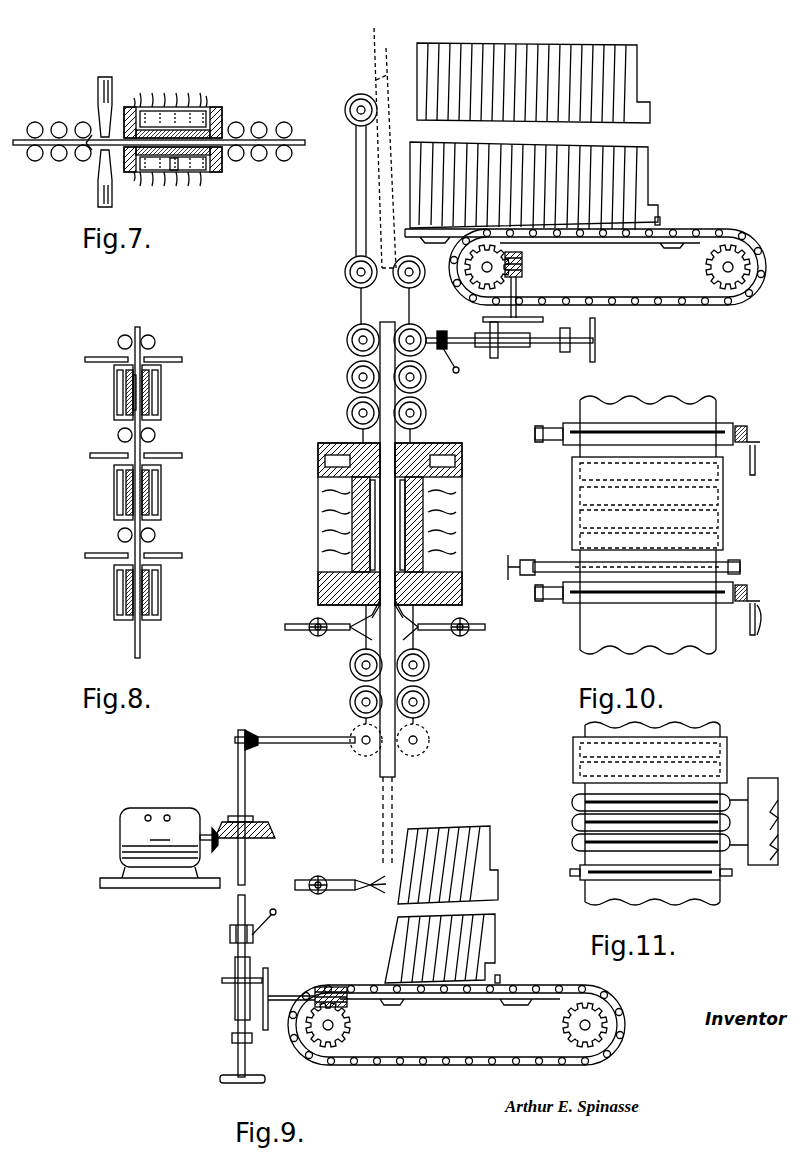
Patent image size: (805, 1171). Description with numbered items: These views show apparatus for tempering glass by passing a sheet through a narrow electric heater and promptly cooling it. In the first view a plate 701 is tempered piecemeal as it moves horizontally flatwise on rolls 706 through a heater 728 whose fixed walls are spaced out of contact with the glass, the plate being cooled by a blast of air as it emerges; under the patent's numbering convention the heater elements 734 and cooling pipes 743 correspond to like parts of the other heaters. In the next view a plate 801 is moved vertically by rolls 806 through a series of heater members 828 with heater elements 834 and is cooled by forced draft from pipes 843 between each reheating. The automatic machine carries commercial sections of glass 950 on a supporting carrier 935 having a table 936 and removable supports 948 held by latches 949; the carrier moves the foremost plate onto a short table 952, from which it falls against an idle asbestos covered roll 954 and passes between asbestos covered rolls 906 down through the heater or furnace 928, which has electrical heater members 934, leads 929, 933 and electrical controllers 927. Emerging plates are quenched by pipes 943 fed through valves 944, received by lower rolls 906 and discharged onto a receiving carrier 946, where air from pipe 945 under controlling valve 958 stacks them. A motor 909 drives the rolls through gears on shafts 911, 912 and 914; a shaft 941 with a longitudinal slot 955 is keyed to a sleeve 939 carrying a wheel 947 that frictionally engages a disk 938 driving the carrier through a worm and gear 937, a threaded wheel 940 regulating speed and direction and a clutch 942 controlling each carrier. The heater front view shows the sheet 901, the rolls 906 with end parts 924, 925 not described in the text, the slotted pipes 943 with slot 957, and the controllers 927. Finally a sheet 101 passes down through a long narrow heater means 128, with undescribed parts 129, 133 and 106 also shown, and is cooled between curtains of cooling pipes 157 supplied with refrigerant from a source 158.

In FIG. 7, the plate 701 is at (292, 147).
In FIG. 7, the rolls 706 is at (76, 155).
In FIG. 7, the cooling pipes 743 is at (113, 90).
In FIG. 7, the heater 728 is at (216, 107).
In FIG. 7, the heater elements 734 is at (172, 170).
In FIG. 8, the plate 801 is at (140, 640).
In FIG. 8, the rolls 806 is at (128, 338).
In FIG. 8, the pipes 843 is at (96, 357).
In FIG. 8, the heater member 828 is at (160, 375).
In FIG. 8, the heater elements 834 is at (145, 396).
In FIG. 9, the sections of sheet or plate glass 950 is at (376, 45).
In FIG. 9, the asbestos covered roll 954 is at (355, 96).
In FIG. 9, the shaft 914 is at (385, 290).
In FIG. 9, the shaft 941 is at (430, 328).
In FIG. 9, the rolls 906 is at (350, 385).
In FIG. 10, the rolls 906 is at (620, 423).
In FIG. 9, the table 952 is at (455, 240).
In FIG. 9, the table 936 is at (602, 245).
In FIG. 9, the worm and gear 937 is at (523, 265).
In FIG. 9, the supporting carrier 935 is at (694, 216).
In FIG. 9, the supports 948 is at (648, 162).
In FIG. 9, the latches 949 is at (660, 215).
In FIG. 9, the longitudinal slot 955 is at (449, 343).
In FIG. 9, the clutch 942 is at (458, 375).
In FIG. 9, the wheel 947 is at (530, 345).
In FIG. 9, the disk 938 is at (545, 320).
In FIG. 9, the sleeve 939 is at (565, 352).
In FIG. 9, the wheel 940 is at (597, 335).
In FIG. 9, the heater member 928 is at (332, 443).
In FIG. 10, the heater member 928 is at (724, 512).
In FIG. 9, the electrical controllers 927 is at (470, 468).
In FIG. 10, the electrical controllers 927 is at (572, 470).
In FIG. 9, the leads 929 is at (322, 500).
In FIG. 10, the leads 929 is at (572, 492).
In FIG. 9, the leads 933 is at (322, 522).
In FIG. 10, the leads 933 is at (572, 500).
In FIG. 9, the electrical heater members 934 is at (352, 482).
In FIG. 9, the pipes 943 is at (335, 632).
In FIG. 10, the pipes 943 is at (738, 560).
In FIG. 9, the valves 944 is at (305, 635).
In FIG. 10, the valves 944 is at (528, 575).
In FIG. 9, the shaft 912 is at (310, 745).
In FIG. 9, the shaft 911 is at (248, 782).
In FIG. 9, the motor 909 is at (132, 810).
In FIG. 9, the controlling valve 958 is at (312, 876).
In FIG. 9, the pipe 945 is at (360, 880).
In FIG. 9, the carrier 946 is at (380, 1065).
In FIG. 10, the sheet or plate 901 is at (655, 400).
In FIG. 10, the roller adjusting knob 924 is at (745, 426).
In FIG. 10, the roller bracket 925 is at (755, 442).
In FIG. 10, the slot 957 is at (560, 560).
In FIG. 11, the sheet or plate 101 is at (712, 724).
In FIG. 11, the heater means 128 is at (575, 740).
In FIG. 11, the heating elements 129 is at (580, 750).
In FIG. 11, the heater wall 133 is at (727, 768).
In FIG. 11, the cooling pipes 157 is at (572, 822).
In FIG. 11, the source 158 is at (758, 821).
In FIG. 11, the roller 106 is at (718, 880).